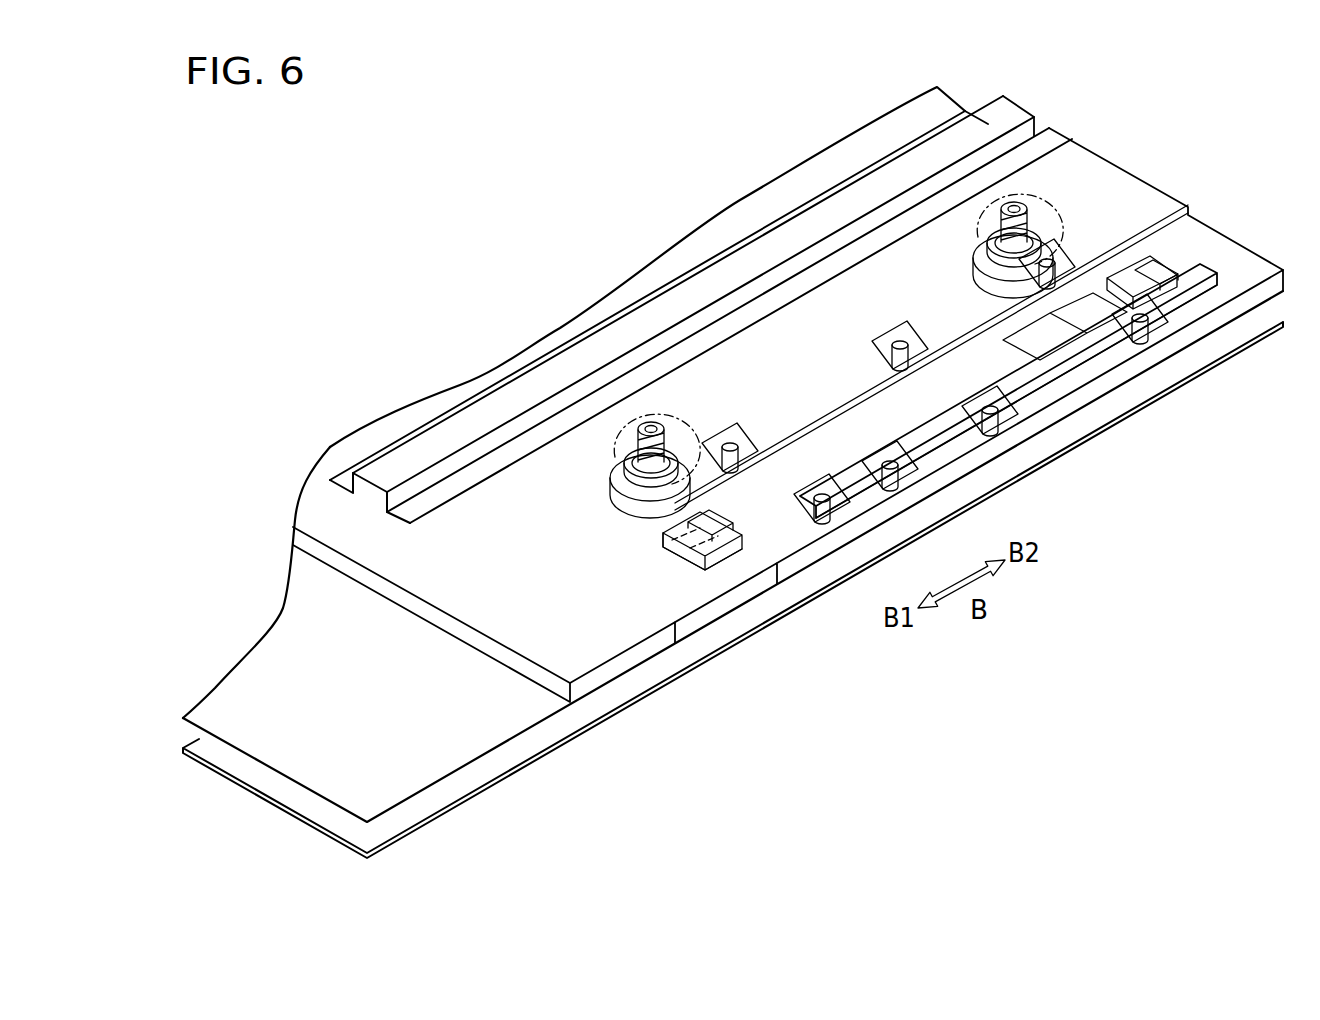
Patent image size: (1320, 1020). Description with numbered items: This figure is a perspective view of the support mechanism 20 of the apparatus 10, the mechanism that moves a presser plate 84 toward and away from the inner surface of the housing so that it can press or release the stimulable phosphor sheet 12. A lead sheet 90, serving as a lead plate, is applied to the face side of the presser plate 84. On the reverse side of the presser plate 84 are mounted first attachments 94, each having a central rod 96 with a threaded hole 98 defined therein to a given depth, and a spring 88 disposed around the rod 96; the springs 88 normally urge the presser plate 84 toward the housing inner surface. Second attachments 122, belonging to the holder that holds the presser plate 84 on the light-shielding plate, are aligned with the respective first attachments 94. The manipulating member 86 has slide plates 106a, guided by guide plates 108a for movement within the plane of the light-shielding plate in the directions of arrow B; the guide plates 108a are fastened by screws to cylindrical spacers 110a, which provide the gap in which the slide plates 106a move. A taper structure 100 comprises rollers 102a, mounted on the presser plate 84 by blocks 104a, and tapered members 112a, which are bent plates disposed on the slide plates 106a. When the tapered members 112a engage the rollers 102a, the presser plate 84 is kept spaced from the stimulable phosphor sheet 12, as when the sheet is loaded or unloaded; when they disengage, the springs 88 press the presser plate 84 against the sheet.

The electronic apparatus 10 is at (373, 153).
The stimulable phosphor sheet 12 is at (616, 712).
The support mechanism 20 is at (1173, 117).
The presser plate 84 is at (696, 588).
The manipulating member 86 is at (1040, 397).
The spring 88 is at (660, 482).
The lead sheet 90 is at (508, 736).
The first attachment 94 is at (618, 490).
The rod 96 is at (624, 458).
The threaded hole 98 is at (648, 420).
The taper structure 100 is at (732, 566).
The roller 102a is at (720, 512).
The block 104a is at (1136, 268).
The slide plate 106a is at (948, 376).
The guide plate 108a is at (950, 445).
The cylindrical spacer 110a is at (822, 494).
The tapered member 112a is at (668, 540).
The second attachment 122 is at (1040, 190).